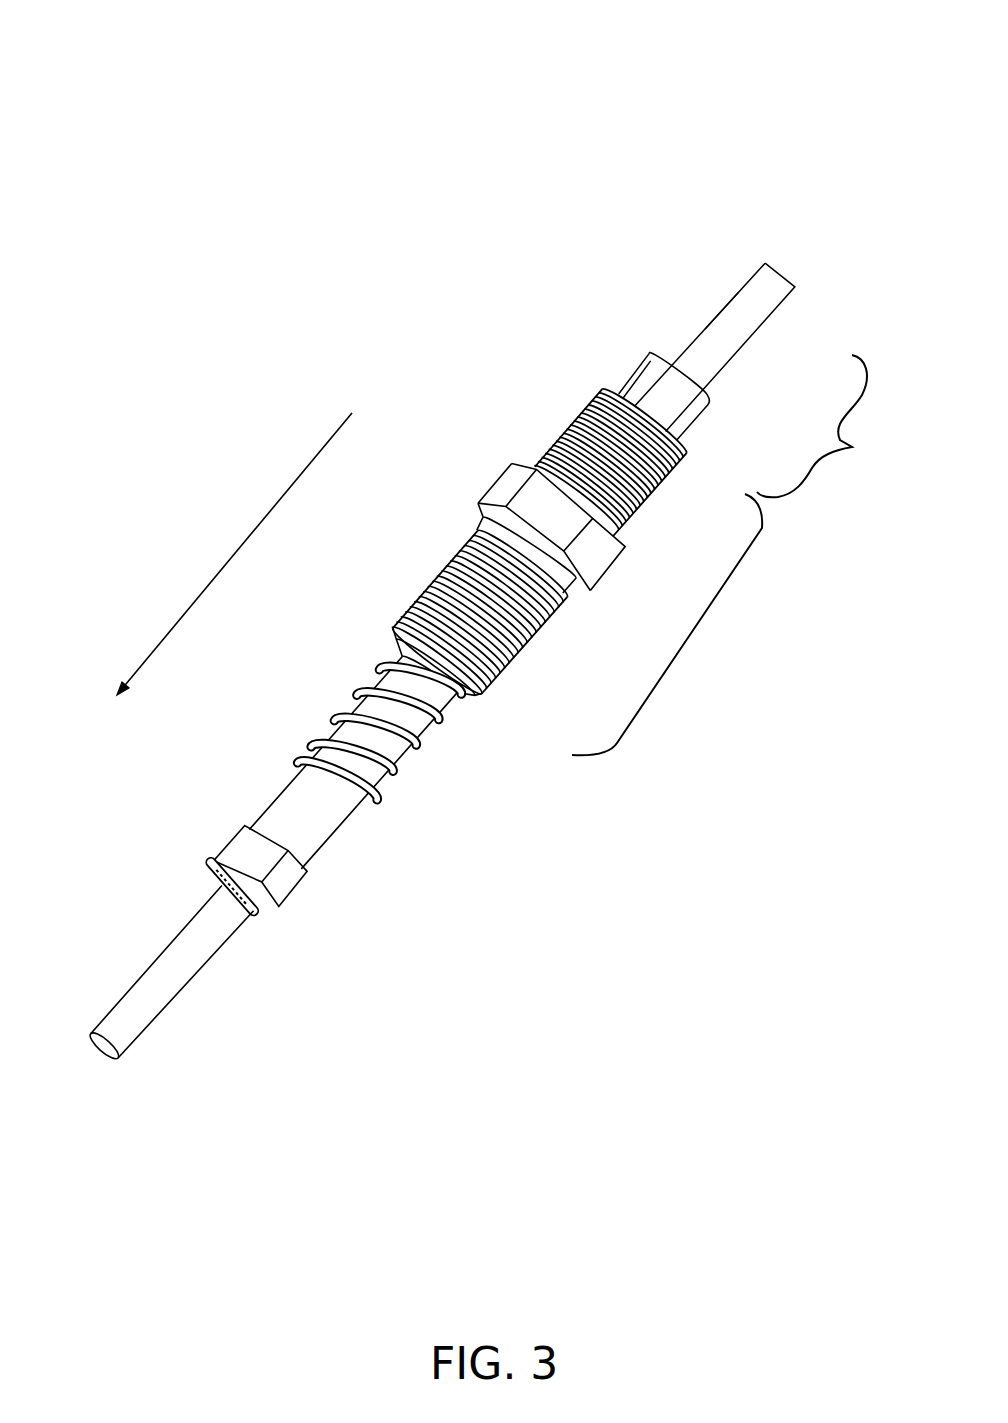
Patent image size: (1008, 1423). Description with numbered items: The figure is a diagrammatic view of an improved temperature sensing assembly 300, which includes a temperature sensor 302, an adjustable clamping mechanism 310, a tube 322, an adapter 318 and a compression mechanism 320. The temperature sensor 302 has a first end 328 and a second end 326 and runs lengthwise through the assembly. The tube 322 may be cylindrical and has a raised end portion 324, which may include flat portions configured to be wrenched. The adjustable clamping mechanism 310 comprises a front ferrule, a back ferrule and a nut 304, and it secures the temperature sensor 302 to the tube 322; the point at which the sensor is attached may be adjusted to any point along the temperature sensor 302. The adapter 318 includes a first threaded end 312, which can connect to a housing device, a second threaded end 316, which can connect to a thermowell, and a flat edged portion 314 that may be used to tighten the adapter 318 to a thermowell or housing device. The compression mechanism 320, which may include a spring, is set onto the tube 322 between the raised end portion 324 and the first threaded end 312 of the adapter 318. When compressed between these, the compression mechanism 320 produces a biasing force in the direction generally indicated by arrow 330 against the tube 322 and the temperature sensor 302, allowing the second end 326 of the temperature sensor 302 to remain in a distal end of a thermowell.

The temperature sensing assembly 300 is at (462, 142).
The temperature sensor 302 is at (792, 263).
The nut 304 is at (629, 358).
The adjustable clamping mechanism 310 is at (828, 426).
The first threaded end 312 is at (661, 502).
The flat edged portion 314 is at (612, 576).
The second threaded end 316 is at (493, 689).
The adapter 318 is at (688, 643).
The compression mechanism 320 is at (397, 792).
The tube 322 is at (337, 850).
The raised end portion 324 is at (208, 866).
The second end 326 is at (173, 986).
The first end 328 is at (730, 306).
The arrow 330 is at (234, 554).